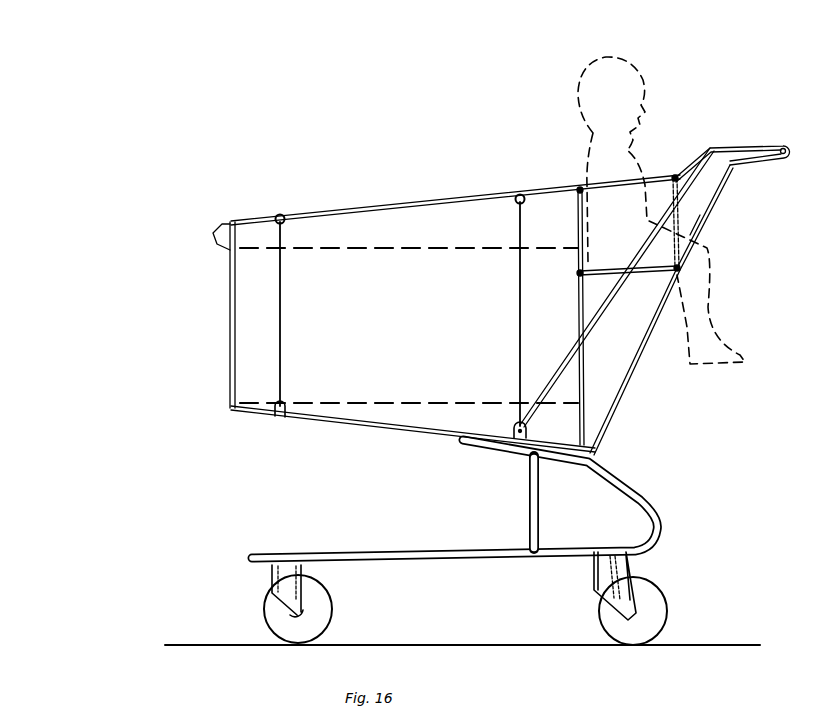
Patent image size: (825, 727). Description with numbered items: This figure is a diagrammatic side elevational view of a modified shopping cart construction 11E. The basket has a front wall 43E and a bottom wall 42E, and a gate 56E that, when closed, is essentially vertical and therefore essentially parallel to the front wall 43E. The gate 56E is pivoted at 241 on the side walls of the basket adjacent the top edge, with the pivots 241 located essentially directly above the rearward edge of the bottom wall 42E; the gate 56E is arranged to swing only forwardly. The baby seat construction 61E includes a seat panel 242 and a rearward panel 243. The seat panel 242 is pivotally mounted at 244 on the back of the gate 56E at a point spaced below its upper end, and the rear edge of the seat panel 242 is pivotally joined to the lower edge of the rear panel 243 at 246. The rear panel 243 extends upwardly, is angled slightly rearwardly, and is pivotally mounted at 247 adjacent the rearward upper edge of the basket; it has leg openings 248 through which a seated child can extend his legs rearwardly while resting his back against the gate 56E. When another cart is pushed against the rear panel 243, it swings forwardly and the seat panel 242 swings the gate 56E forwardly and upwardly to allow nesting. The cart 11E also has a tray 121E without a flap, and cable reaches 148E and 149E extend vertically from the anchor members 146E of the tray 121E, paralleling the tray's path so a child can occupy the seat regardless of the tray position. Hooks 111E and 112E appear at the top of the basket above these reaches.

The modified shopping cart construction 11E is at (200, 284).
The front wall 43E is at (230, 374).
The hook 111E is at (282, 216).
The cable reach 148E is at (282, 297).
The hook 112E is at (519, 194).
The cable reach 149E is at (519, 331).
The pivot 241 is at (580, 188).
The pivotal mounting of seat panel 244 is at (576, 280).
The seat panel 242 is at (633, 277).
The pivotal mounting of rear panel 246 is at (678, 275).
The pivot of rear panel 247 is at (676, 176).
The rearward panel 243 is at (672, 203).
The leg openings 248 is at (700, 225).
The gate 56E is at (586, 222).
The baby seat construction 61E is at (683, 270).
The anchor members 146E is at (279, 416).
The tray 121E is at (340, 420).
The bottom wall 42E is at (404, 443).